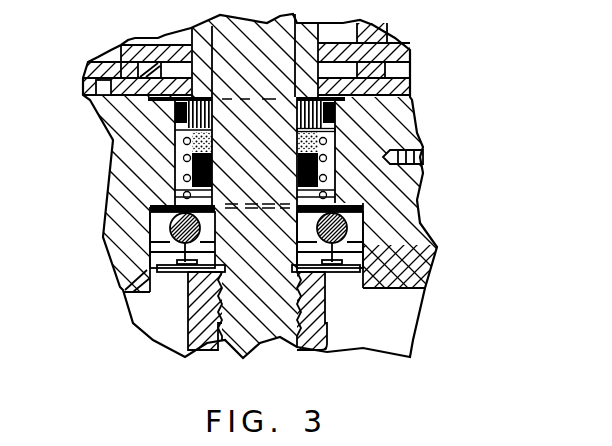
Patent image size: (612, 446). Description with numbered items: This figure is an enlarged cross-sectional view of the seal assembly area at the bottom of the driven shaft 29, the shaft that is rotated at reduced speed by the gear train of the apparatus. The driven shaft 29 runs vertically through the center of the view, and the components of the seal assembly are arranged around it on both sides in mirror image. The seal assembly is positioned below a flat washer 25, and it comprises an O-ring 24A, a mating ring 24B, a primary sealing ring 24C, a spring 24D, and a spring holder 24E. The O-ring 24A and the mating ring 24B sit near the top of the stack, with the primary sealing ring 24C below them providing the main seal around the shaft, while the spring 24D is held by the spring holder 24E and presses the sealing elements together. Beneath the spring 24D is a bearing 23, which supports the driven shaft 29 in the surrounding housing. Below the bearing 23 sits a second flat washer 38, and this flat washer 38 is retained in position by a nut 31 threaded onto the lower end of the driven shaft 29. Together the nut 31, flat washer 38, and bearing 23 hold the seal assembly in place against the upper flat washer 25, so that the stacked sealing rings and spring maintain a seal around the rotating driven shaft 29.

The bearing 23 is at (360, 237).
The O-ring 24A is at (172, 115).
The mating ring 24B is at (337, 124).
The primary sealing ring 24C is at (177, 150).
The spring 24D is at (337, 197).
The spring holder 24E is at (345, 206).
The flat washer 25 is at (338, 108).
The driven shaft 29 is at (275, 313).
The nut 31 is at (190, 303).
The flat washer 38 is at (342, 268).